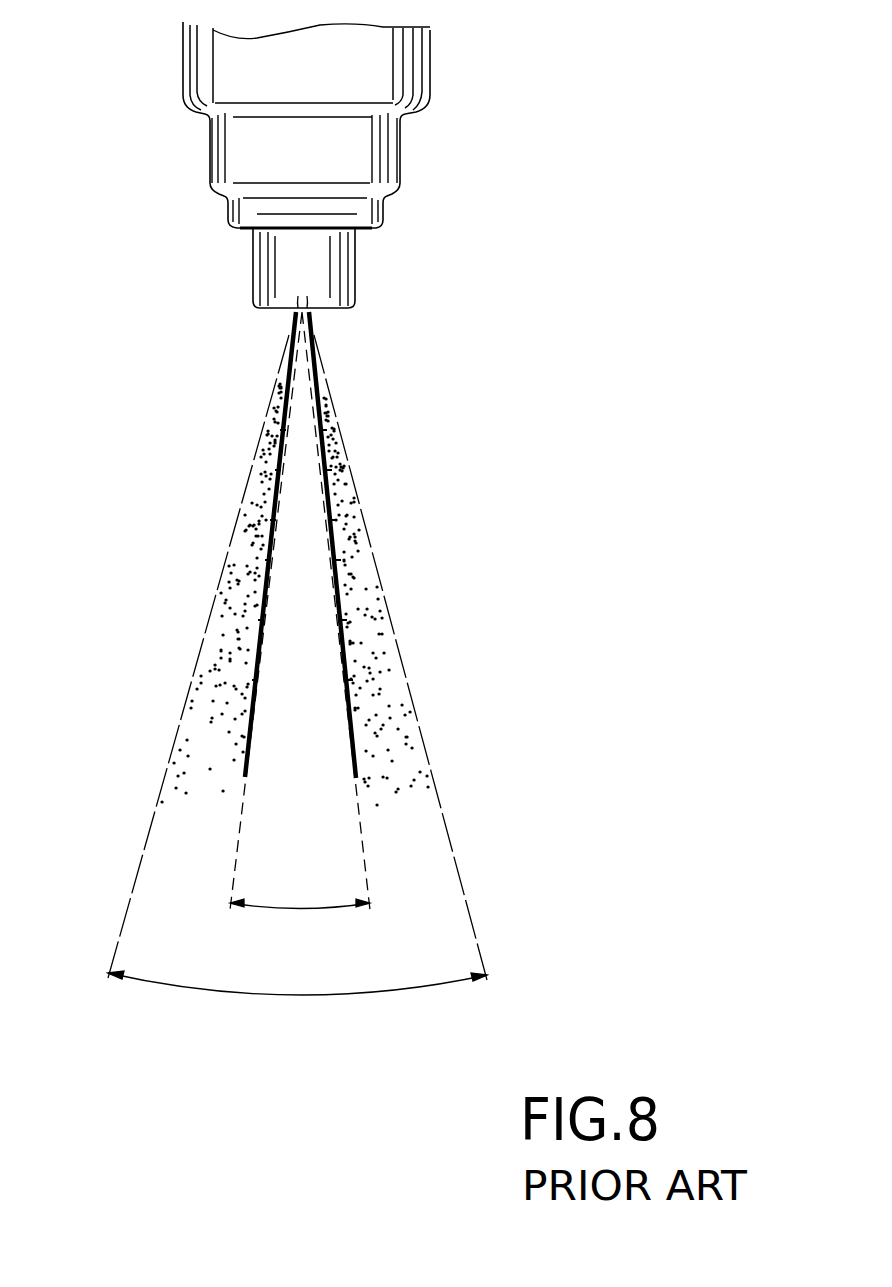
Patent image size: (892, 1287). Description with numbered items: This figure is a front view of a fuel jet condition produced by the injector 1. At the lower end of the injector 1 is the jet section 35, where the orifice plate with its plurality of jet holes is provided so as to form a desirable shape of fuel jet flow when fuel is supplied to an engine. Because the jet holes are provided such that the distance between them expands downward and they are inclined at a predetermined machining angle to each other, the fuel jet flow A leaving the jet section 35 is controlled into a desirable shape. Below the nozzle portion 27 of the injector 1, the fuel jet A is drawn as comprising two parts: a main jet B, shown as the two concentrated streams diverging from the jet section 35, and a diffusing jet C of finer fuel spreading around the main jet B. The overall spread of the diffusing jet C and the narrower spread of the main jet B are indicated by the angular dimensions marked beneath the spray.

The injector 1 is at (466, 135).
The nozzle tip 27 is at (357, 272).
The jet section 35 is at (332, 319).
The fuel jet flow A is at (499, 705).
The main jet B is at (340, 573).
The diffusing jet C is at (222, 660).